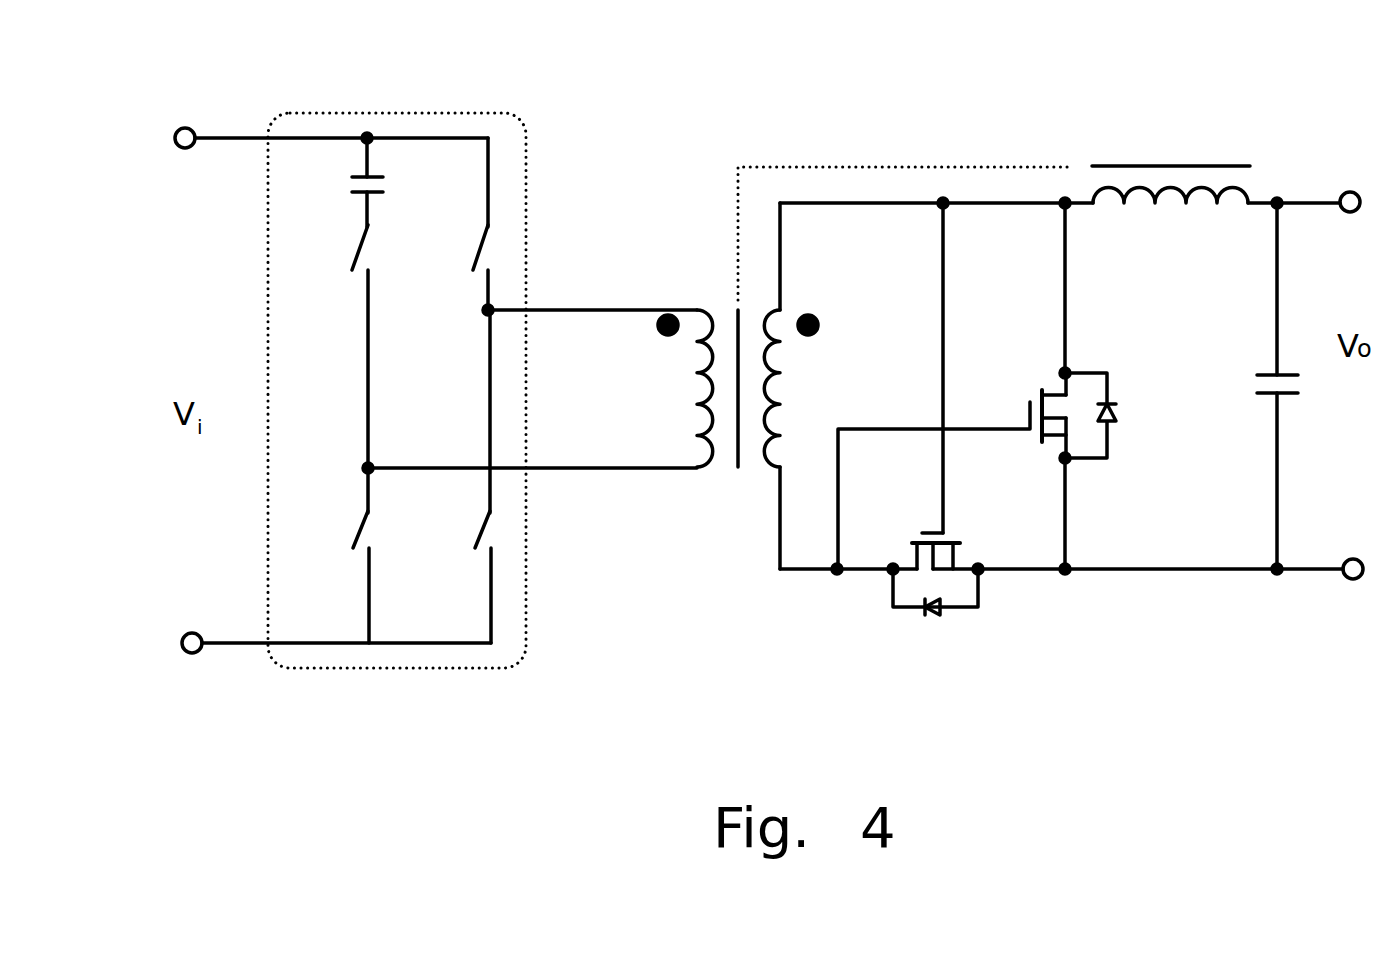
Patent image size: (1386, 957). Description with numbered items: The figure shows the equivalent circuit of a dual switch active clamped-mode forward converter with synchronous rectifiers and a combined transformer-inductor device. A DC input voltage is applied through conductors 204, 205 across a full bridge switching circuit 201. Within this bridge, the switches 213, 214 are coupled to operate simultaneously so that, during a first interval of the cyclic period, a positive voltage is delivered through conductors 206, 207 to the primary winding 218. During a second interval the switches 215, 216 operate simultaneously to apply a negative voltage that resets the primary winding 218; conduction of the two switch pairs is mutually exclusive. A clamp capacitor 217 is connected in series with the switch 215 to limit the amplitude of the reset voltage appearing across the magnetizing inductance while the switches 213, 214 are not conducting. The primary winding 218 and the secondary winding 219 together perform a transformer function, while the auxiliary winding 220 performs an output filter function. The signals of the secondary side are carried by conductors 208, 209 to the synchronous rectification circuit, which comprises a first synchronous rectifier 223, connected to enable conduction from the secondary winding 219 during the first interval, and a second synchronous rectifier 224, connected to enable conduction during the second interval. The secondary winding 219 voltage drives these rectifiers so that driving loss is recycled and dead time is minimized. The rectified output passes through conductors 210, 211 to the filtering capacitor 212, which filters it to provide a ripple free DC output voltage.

The full bridge switching circuit 201 is at (415, 120).
The conductor 204 is at (222, 138).
The conductor 205 is at (228, 645).
The conductor 206 is at (600, 308).
The conductor 207 is at (603, 470).
The conductor 208 is at (862, 202).
The conductor 209 is at (805, 575).
The conductor 210 is at (1310, 200).
The conductor 211 is at (1313, 572).
The filtering capacitor 212 is at (1250, 386).
The switch 213 is at (455, 224).
The switch 214 is at (335, 511).
The switch 215 is at (333, 250).
The switch 216 is at (456, 533).
The clamp capacitor 217 is at (338, 182).
The primary winding 218 is at (673, 388).
The secondary winding 219 is at (804, 388).
The auxiliary winding 220 is at (1171, 206).
The first synchronous rectifier 223 is at (930, 533).
The second synchronous rectifier 224 is at (1007, 386).